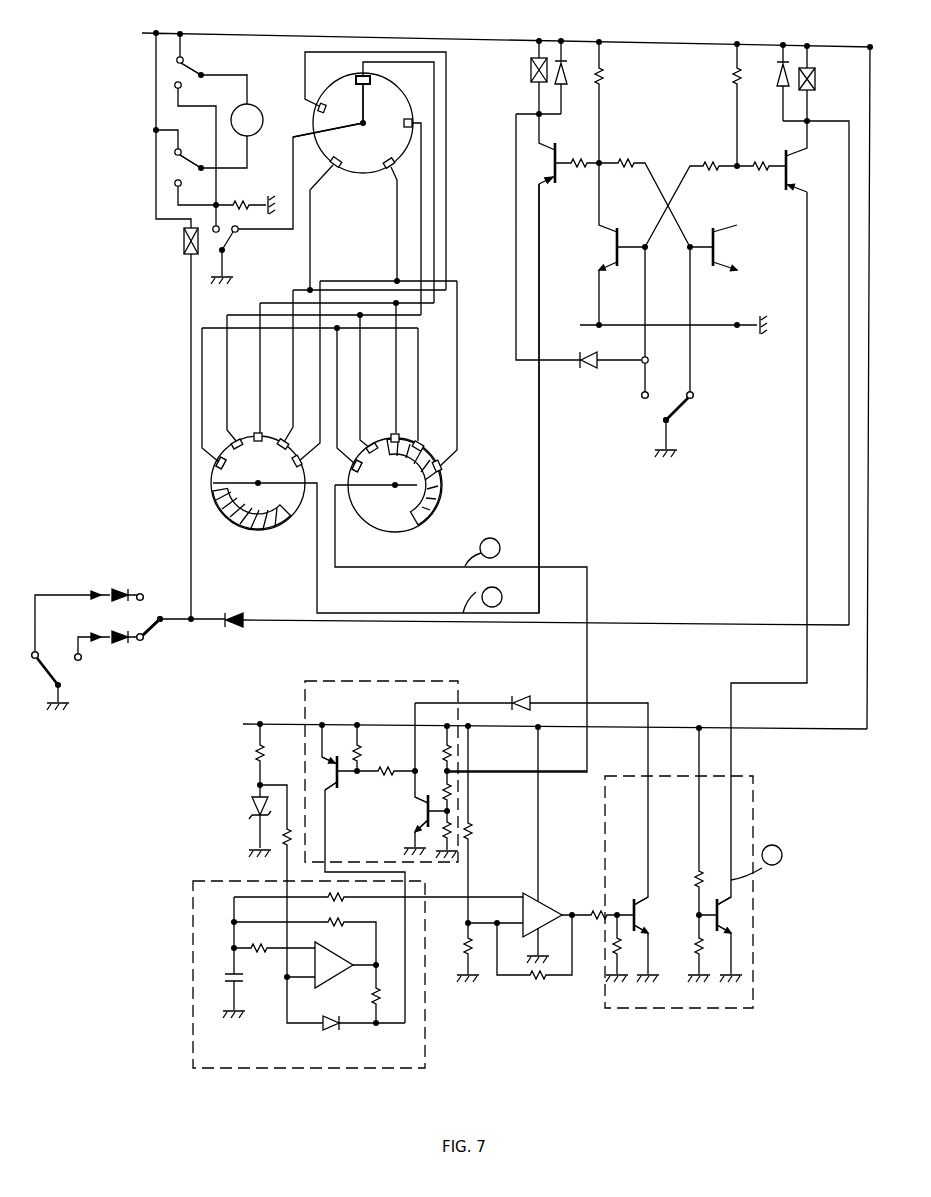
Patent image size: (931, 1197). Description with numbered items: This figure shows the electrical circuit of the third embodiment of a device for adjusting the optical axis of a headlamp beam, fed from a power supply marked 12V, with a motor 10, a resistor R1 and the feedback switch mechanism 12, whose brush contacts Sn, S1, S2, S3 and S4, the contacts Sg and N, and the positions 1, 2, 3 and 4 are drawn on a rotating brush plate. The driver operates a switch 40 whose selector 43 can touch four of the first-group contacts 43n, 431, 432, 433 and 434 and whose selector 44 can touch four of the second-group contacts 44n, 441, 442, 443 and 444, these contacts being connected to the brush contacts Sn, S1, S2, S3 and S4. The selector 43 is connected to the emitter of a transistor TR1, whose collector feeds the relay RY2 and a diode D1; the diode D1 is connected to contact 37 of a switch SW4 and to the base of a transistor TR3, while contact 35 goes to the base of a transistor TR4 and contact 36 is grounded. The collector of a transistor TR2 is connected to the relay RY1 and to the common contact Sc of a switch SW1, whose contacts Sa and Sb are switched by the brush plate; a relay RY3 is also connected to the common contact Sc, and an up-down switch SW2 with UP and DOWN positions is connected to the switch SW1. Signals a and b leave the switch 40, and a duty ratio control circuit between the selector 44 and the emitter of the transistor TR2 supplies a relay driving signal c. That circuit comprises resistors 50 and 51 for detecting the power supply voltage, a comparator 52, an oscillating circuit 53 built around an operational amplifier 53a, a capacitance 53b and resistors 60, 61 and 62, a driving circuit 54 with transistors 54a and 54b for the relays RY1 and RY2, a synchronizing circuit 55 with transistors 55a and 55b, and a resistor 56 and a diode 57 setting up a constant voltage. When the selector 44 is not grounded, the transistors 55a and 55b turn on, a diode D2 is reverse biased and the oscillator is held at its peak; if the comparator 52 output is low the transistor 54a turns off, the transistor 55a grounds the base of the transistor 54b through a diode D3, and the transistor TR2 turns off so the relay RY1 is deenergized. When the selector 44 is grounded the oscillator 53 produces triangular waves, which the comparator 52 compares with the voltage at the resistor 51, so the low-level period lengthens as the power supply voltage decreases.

The power supply 12V is at (844, 32).
The feedback switch mechanism 12 is at (290, 62).
The motor 10 is at (263, 114).
The relay RY1 is at (172, 73).
The relay RY2 is at (172, 168).
The relay RY3 is at (183, 244).
The resistor R1 is at (253, 190).
The brush contact S1 is at (357, 76).
The brush contact S2 is at (320, 113).
The brush contact S3 is at (337, 168).
The brush contact S4 is at (387, 169).
The ground contact Sg is at (368, 85).
The brush contact Sn is at (403, 126).
The neutral contact N is at (311, 290).
The contact position 1 is at (301, 260).
The contact position 2 is at (312, 258).
The contact position 3 is at (343, 293).
The contact position 4 is at (372, 301).
The transistor TR1 is at (553, 161).
The transistor TR2 is at (796, 168).
The transistor TR3 is at (615, 250).
The transistor TR4 is at (719, 250).
The diode D1 is at (597, 373).
The contact 37 is at (640, 397).
The contact 35 is at (694, 394).
The contact 36 is at (670, 420).
The switch SW4 is at (660, 402).
The switch 40 is at (322, 470).
The selector 43 is at (255, 518).
The contact 431 is at (229, 438).
The contact 432 is at (257, 430).
The contact 433 is at (283, 438).
The contact 434 is at (297, 470).
The contact 43n is at (218, 459).
The selector 44 is at (435, 504).
The contact 441 is at (368, 443).
The contact 442 is at (392, 433).
The contact 443 is at (417, 440).
The contact 444 is at (442, 470).
The contact 44n is at (353, 496).
The up controlling signal a is at (482, 552).
The terminal b is at (482, 600).
The relay driving signal c is at (756, 862).
The contact Sa is at (141, 594).
The contact Sb is at (144, 641).
The common contact Sc is at (161, 617).
The switch SW1 is at (160, 627).
The up-down switch SW2 is at (60, 670).
The up position UP is at (24, 656).
The down position DOWN is at (105, 665).
The synchronizing circuit 55 is at (365, 765).
The transistor 55a is at (423, 811).
The transistor 55b is at (330, 786).
The resistor 56 is at (258, 762).
The diode 57 is at (254, 808).
The resistor 60 is at (285, 846).
The resistor 50 is at (476, 834).
The diode D3 is at (537, 676).
The comparator 52 is at (555, 912).
The resistor 51 is at (464, 952).
The driving circuit 54 is at (700, 892).
The transistor 54a is at (657, 915).
The transistor 54b is at (727, 918).
The oscillating circuit 53 is at (281, 974).
The operational amplifier 53a is at (343, 973).
The capacitance 53b is at (245, 978).
The resistor 61 is at (338, 927).
The resistor 62 is at (381, 1003).
The diode D2 is at (328, 1030).